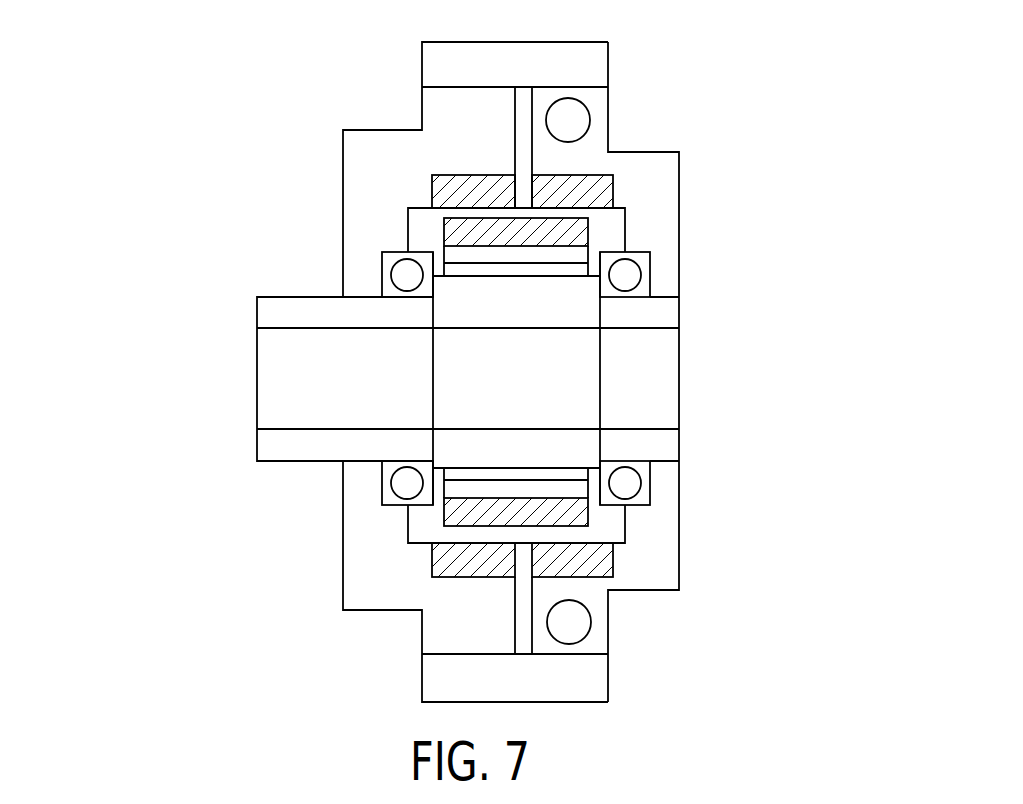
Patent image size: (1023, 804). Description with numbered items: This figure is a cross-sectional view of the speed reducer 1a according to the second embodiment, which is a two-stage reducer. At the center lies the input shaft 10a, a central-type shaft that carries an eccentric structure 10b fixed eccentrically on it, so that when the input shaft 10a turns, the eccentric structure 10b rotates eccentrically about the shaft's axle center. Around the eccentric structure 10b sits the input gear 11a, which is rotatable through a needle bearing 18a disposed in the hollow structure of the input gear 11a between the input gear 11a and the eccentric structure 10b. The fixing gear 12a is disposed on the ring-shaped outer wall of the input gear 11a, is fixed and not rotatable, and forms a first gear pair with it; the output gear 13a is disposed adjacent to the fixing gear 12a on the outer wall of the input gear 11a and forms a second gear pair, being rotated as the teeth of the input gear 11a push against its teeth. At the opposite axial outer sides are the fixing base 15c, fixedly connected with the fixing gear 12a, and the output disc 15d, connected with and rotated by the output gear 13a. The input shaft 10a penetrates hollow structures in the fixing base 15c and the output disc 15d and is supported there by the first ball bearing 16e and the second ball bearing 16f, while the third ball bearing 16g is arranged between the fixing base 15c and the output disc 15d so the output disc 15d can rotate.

The speed reducer 1a is at (992, 83).
The input shaft 10a is at (310, 443).
The eccentric structure 10b is at (537, 315).
The input gear 11a is at (567, 230).
The fixing gear 12a is at (480, 187).
The output gear 13a is at (570, 187).
The fixing base 15c is at (368, 205).
The output disc 15d is at (665, 235).
The first ball bearing 16e is at (385, 508).
The second ball bearing 16f is at (625, 487).
The third ball bearing 16g is at (570, 620).
The needle bearing 18a is at (480, 472).